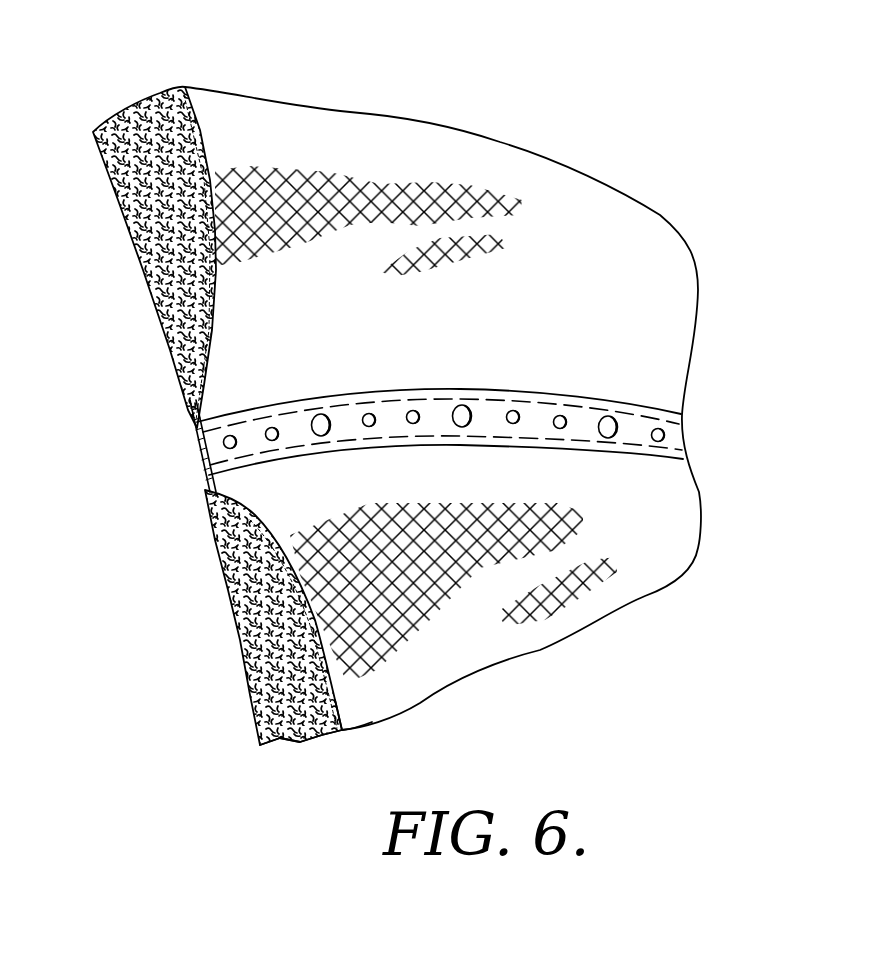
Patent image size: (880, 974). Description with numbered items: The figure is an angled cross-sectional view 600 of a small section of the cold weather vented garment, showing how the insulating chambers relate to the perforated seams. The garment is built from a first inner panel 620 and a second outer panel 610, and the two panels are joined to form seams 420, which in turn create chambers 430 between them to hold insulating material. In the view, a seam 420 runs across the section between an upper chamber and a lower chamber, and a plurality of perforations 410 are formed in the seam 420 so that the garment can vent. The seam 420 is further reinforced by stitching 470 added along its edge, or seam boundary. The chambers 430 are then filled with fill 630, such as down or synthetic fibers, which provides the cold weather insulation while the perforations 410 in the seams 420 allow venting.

The angled cross-sectional view 600 is at (495, 126).
The chamber 430 is at (163, 413).
The stitching 470 is at (202, 458).
The seam 420 is at (676, 449).
The perforations 410 is at (608, 424).
The first inner panel 620 is at (230, 571).
The second outer panel 610 is at (344, 719).
The fill 630 is at (293, 716).